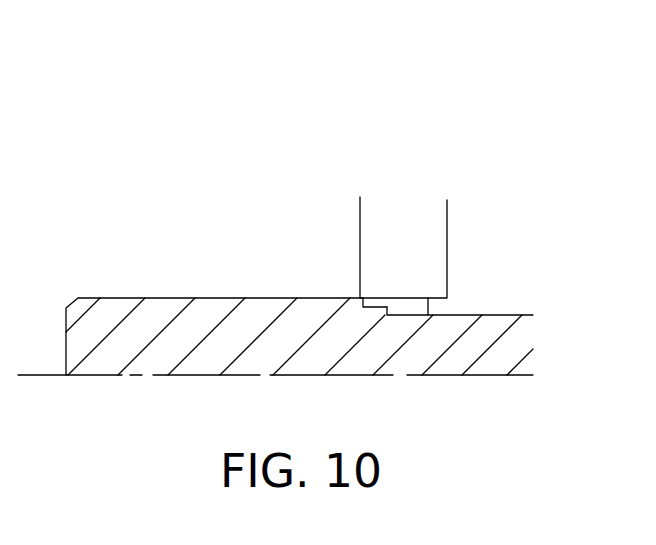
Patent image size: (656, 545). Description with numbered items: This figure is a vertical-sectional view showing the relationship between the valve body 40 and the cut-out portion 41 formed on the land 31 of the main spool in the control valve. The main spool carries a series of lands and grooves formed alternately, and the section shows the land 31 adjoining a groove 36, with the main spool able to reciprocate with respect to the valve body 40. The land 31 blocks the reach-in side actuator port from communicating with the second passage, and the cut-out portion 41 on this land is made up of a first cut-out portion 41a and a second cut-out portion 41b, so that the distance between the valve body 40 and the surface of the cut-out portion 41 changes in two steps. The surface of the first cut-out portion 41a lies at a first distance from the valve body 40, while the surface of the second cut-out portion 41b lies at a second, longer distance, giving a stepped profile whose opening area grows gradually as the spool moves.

The land 31 is at (168, 307).
The groove 36 is at (492, 330).
The valve body 40 is at (438, 225).
The cut-out portion 41 is at (478, 82).
The first cut-out portion 41a is at (374, 300).
The second cut-out portion 41b is at (410, 305).